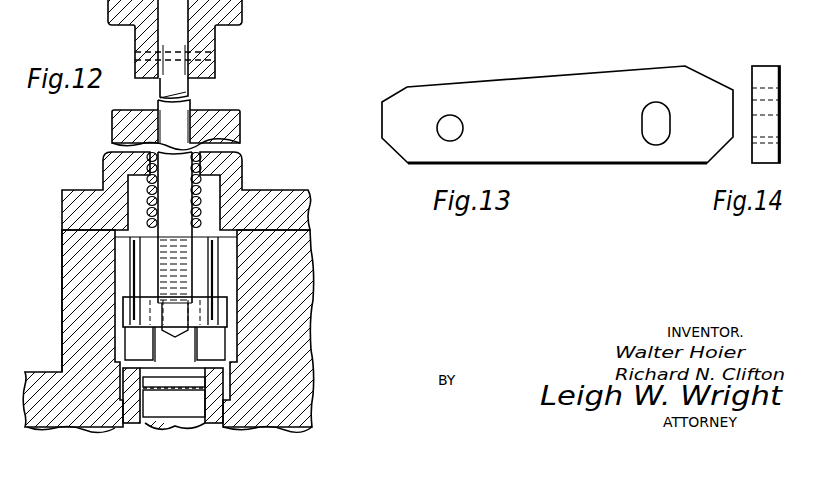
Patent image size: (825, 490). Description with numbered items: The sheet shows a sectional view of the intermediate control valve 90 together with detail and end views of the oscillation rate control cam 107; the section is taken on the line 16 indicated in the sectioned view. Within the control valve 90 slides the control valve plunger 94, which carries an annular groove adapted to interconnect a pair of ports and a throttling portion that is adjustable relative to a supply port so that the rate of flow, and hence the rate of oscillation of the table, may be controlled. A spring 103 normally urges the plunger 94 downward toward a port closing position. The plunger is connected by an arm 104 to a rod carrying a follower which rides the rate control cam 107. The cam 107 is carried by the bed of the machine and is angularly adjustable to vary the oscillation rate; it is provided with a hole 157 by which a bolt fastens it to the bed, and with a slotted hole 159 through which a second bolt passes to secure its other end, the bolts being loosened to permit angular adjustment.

In FIG. 12, the section line indicator 16 is at (91, 264).
In FIG. 12, the intermediate control valve 90 is at (121, 412).
In FIG. 12, the control valve plunger 94 is at (183, 403).
In FIG. 12, the spring 103 is at (200, 184).
In FIG. 12, the arm 104 is at (230, 328).
In FIG. 13, the rate control cam 107 is at (535, 102).
In FIG. 14, the rate control cam 107 is at (765, 65).
In FIG. 13, the hole 157 is at (448, 128).
In FIG. 13, the slotted hole 159 is at (655, 115).